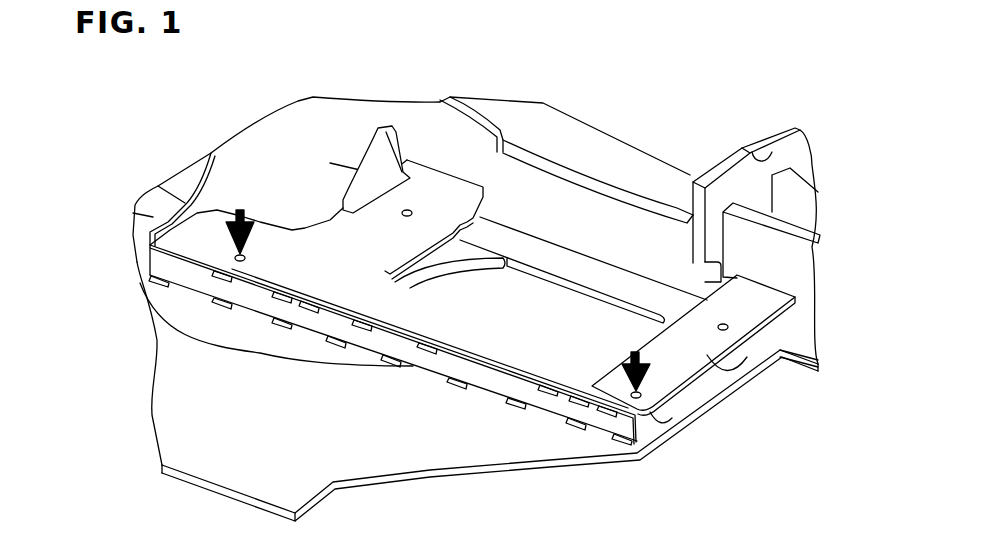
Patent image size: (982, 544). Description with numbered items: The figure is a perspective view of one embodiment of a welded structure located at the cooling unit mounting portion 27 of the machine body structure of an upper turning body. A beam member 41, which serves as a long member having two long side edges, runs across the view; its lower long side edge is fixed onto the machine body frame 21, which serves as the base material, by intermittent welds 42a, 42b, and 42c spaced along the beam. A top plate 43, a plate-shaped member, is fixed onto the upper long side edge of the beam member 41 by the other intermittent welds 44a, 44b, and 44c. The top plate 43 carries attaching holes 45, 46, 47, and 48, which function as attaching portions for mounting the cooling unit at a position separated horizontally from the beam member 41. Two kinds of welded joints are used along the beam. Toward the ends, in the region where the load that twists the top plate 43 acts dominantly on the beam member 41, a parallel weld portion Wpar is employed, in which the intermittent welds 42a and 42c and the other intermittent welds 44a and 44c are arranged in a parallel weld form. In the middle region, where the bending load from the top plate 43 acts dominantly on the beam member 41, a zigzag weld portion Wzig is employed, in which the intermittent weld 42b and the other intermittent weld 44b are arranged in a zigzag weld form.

The machine body frame 21 is at (212, 450).
The cooling unit mounting portion 27 is at (416, 378).
The beam member 41 is at (437, 363).
The intermittent weld 42a is at (300, 306).
The intermittent weld 42b is at (516, 408).
The intermittent weld 42c is at (614, 441).
The top plate 43 is at (542, 392).
The other intermittent weld 44a is at (413, 274).
The other intermittent weld 44b is at (493, 390).
The other intermittent weld 44c is at (610, 410).
The attaching hole 45 is at (237, 254).
The attaching hole 46 is at (642, 396).
The attaching hole 47 is at (735, 332).
The attaching hole 48 is at (404, 210).
The parallel weld portion Wpar is at (152, 272).
The zigzag weld portion Wzig is at (420, 348).